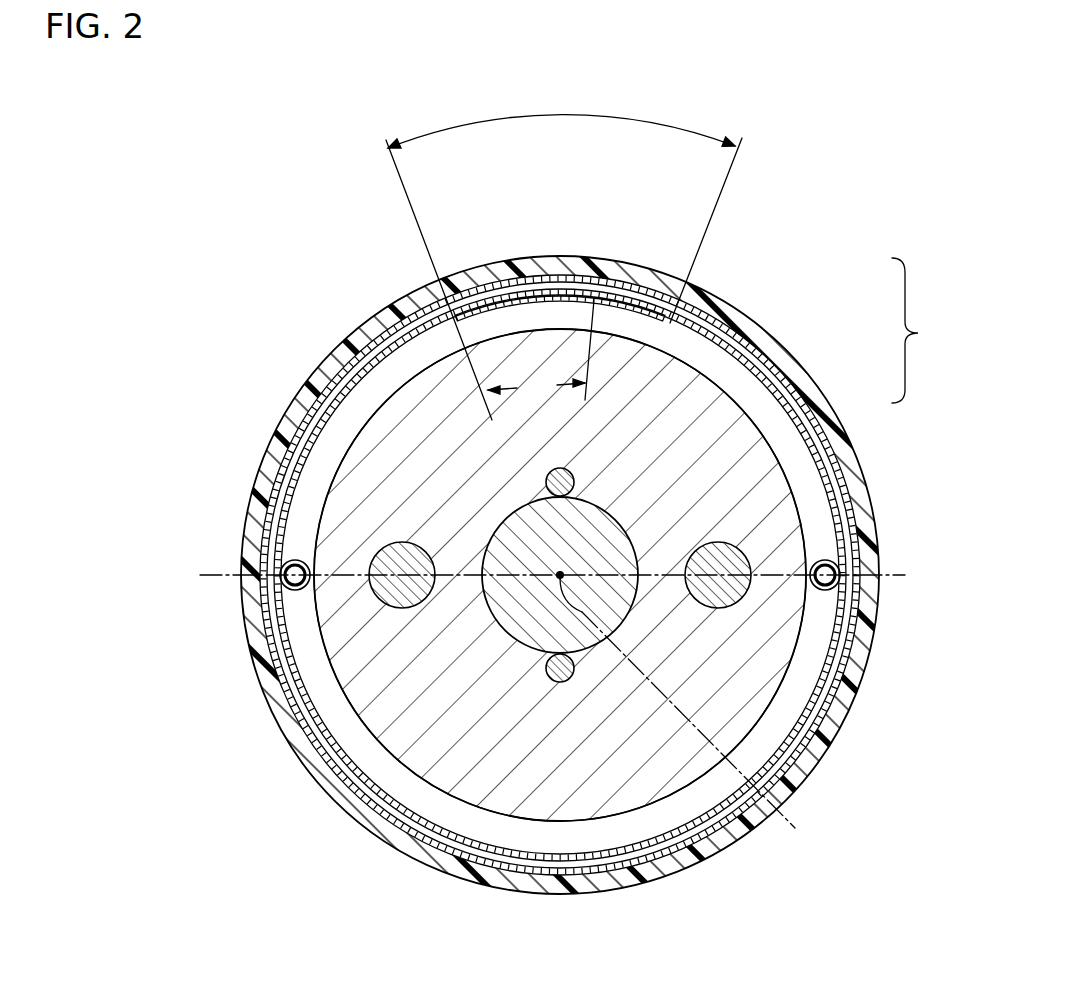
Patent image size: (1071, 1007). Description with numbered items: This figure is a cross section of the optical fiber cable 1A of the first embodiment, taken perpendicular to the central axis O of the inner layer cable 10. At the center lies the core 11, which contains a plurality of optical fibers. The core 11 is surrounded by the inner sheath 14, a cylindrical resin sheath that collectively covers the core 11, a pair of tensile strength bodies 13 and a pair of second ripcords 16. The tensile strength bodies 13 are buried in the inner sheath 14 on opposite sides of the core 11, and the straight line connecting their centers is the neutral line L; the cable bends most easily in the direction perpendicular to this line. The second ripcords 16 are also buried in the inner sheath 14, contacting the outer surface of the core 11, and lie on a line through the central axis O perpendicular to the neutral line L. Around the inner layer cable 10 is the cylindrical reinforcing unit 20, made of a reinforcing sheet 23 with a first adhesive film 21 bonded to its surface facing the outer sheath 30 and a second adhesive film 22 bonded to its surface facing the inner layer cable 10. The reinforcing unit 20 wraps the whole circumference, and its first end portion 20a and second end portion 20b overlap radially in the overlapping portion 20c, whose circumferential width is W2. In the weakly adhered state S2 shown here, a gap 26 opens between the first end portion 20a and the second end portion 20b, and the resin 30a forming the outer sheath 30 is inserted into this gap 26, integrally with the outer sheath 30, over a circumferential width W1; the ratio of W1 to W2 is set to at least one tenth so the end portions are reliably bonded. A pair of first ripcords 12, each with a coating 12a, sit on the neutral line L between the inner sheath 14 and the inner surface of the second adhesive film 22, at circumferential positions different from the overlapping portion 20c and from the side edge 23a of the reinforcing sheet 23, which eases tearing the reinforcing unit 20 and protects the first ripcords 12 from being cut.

The optical fiber cable 1A is at (255, 225).
The inner layer cable 10 is at (560, 832).
The core 11 is at (517, 620).
The first ripcord 12 is at (290, 592).
The coating of the first ripcord 12a is at (288, 558).
The tensile strength body 13 is at (393, 598).
The inner sheath 14 is at (645, 772).
The second ripcord 16 is at (548, 478).
The reinforcing unit 20 is at (923, 330).
The first end portion 20a is at (578, 290).
The second end portion 20b is at (700, 370).
The overlapping portion 20c is at (606, 268).
The first adhesive film 21 is at (710, 296).
The second adhesive film 22 is at (778, 388).
The reinforcing sheet 23 is at (772, 330).
The side edge 23a is at (690, 335).
The gap 26 is at (488, 405).
The outer sheath 30 is at (853, 452).
The resin 30a is at (518, 300).
The state S2 is at (432, 316).
The neutral line L is at (900, 575).
The central axis O is at (690, 721).
The resin width W1 is at (541, 354).
The overlap width W2 is at (564, 249).